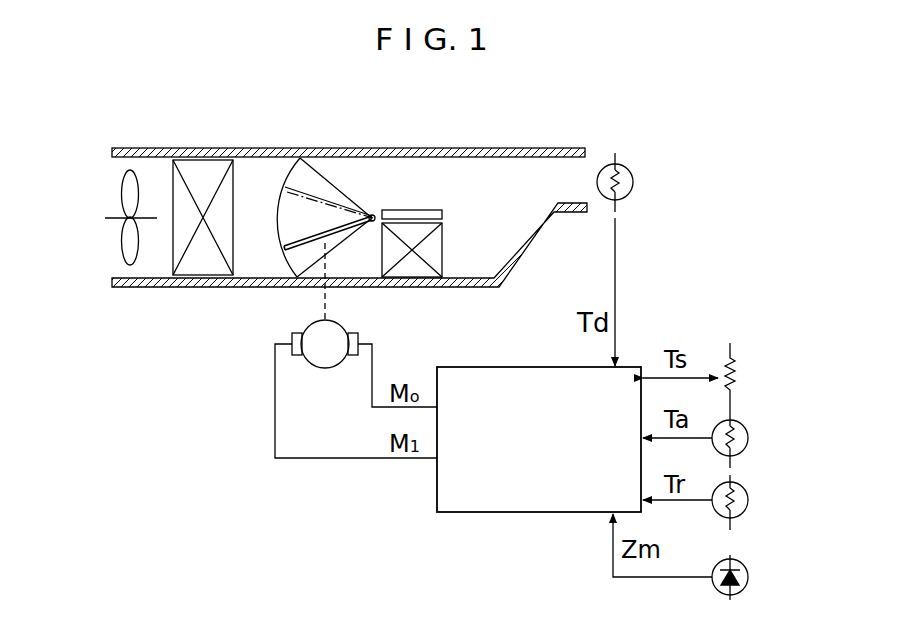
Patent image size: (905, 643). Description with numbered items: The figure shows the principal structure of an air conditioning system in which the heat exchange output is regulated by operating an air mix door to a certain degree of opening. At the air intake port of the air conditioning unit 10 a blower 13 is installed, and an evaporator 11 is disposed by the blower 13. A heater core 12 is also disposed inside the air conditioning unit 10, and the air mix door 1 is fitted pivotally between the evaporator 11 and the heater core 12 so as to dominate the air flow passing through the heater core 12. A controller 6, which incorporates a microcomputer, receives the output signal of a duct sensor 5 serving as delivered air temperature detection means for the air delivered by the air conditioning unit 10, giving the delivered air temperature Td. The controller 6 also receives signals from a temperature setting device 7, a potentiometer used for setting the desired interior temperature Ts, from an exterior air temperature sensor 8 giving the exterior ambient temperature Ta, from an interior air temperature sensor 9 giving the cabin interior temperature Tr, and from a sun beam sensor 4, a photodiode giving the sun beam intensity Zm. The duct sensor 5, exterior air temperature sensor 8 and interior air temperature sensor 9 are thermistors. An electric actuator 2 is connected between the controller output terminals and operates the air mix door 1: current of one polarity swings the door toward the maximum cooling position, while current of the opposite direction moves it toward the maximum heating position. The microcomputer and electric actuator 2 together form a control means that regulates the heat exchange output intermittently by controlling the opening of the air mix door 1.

The air mix door 1 is at (328, 228).
The electric actuator 2 is at (305, 326).
The sun beam sensor 4 is at (748, 577).
The duct sensor 5 is at (633, 182).
The controller 6 is at (494, 367).
The temperature setting device 7 is at (741, 378).
The exterior air temperature sensor 8 is at (748, 438).
The interior air temperature sensor 9 is at (748, 500).
The air conditioning unit 10 is at (160, 148).
The evaporator 11 is at (208, 169).
The heater core 12 is at (415, 288).
The blower 13 is at (123, 176).